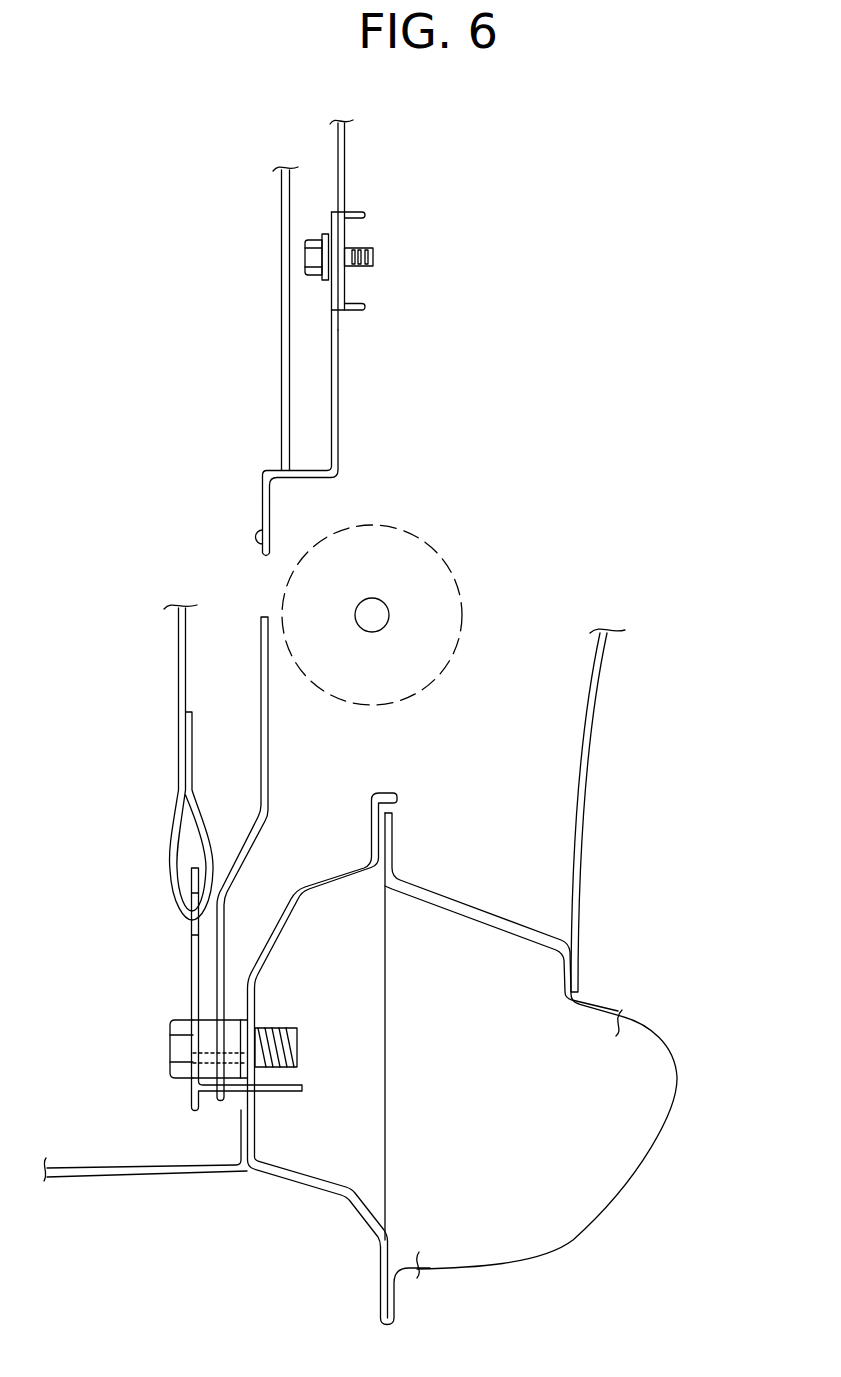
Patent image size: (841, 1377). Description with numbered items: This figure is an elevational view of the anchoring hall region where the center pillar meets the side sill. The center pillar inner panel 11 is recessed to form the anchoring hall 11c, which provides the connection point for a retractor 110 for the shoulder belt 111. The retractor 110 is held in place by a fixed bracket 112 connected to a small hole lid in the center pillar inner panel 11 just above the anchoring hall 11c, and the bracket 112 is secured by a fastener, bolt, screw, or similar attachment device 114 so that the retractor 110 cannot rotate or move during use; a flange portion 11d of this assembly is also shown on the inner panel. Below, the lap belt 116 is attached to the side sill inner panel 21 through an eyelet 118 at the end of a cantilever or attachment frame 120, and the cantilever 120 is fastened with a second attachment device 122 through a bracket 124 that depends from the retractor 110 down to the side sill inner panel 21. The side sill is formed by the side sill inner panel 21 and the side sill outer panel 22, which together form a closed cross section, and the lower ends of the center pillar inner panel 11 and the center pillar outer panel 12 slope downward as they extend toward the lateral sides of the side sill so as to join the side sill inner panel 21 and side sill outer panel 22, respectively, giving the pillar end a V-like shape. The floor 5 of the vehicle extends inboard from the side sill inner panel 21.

The floor 5 is at (138, 1174).
The center pillar inner panel 11 is at (346, 142).
The anchoring hall 11c is at (265, 556).
The bracket flange 11d is at (348, 211).
The center pillar outer panel 12 is at (590, 727).
The side sill inner panel 21 is at (321, 876).
The side sill outer panel 22 is at (666, 1023).
The retractor 110 is at (412, 537).
The shoulder belt 111 is at (280, 283).
The fixed bracket 112 is at (337, 367).
The attachment device 114 is at (322, 237).
The lap belt 116 is at (164, 666).
The eyelet 118 is at (186, 916).
The cantilever 120 is at (191, 975).
The attachment device 122 is at (176, 1078).
The bracket 124 is at (247, 705).